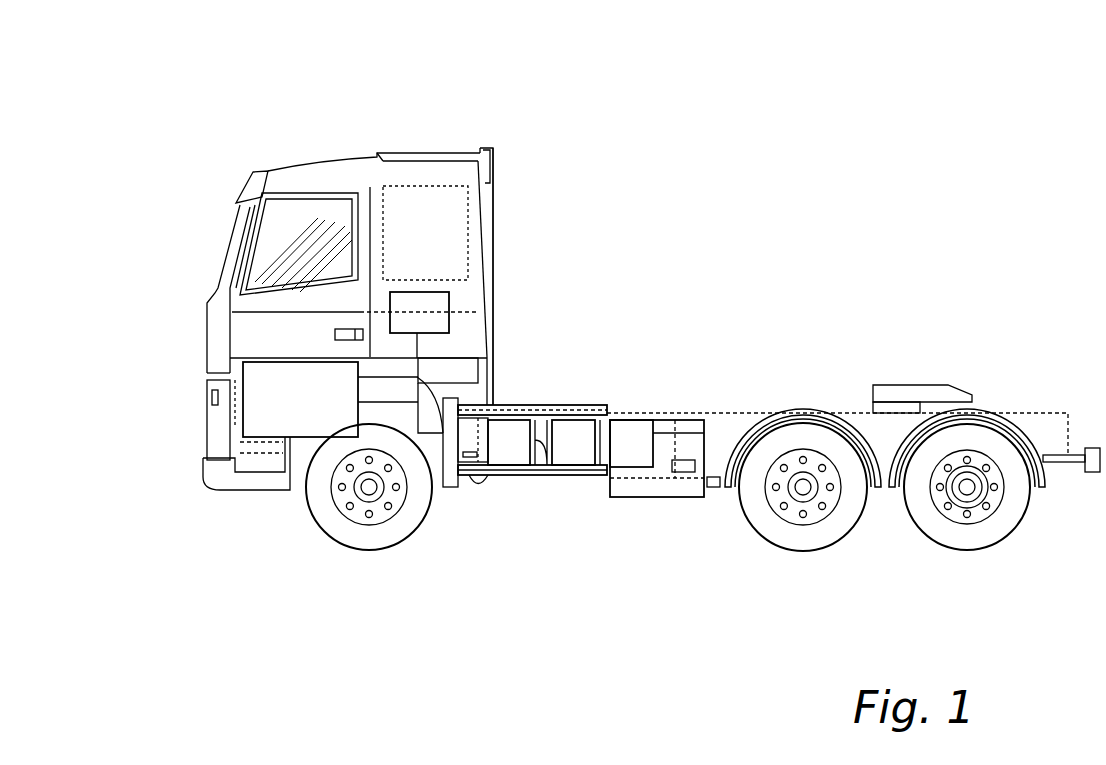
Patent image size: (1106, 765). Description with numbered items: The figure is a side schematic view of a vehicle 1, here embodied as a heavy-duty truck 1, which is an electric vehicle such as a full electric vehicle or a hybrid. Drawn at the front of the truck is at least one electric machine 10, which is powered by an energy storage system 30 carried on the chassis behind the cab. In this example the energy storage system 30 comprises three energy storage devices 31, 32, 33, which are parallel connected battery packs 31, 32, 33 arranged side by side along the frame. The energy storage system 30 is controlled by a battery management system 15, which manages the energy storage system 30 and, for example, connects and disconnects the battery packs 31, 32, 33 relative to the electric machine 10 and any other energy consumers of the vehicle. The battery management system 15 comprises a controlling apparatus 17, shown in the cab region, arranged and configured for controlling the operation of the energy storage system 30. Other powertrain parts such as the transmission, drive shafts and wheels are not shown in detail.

The vehicle 1 is at (314, 89).
The electric machine 10 is at (263, 440).
The battery management system 15 is at (531, 352).
The controlling apparatus 17 is at (449, 297).
The energy storage system 30 is at (592, 379).
The energy storage device 31 is at (510, 467).
The energy storage device 32 is at (567, 468).
The energy storage device 33 is at (630, 467).